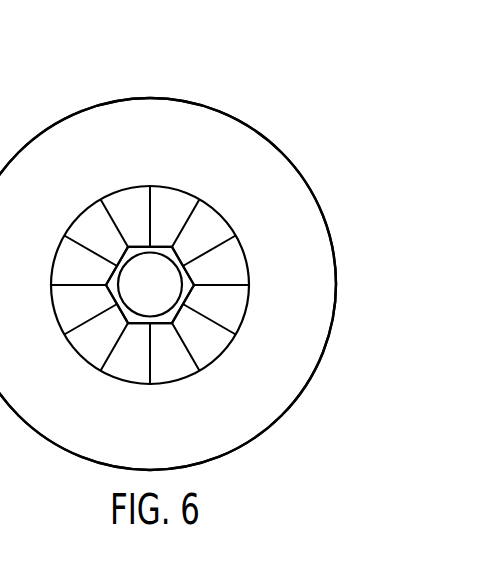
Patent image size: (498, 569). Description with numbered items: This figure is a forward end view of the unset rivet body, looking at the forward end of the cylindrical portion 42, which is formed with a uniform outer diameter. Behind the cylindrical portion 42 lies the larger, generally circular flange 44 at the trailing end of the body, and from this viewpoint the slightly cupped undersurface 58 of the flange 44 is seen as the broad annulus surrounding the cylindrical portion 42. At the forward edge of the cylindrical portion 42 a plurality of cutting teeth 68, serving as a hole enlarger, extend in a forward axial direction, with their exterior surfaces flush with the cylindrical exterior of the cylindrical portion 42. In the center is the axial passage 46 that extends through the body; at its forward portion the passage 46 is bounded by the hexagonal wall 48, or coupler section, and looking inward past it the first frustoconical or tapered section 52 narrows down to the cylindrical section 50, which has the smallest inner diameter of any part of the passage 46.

The flange 44 is at (207, 100).
The cupped undersurface 58 is at (287, 165).
The cylindrical portion 42 is at (258, 257).
The first frustoconical or tapered section 52 is at (186, 273).
The cutting teeth 68 is at (229, 318).
The axial passage 46 is at (133, 266).
The hexagonal wall 48 is at (113, 294).
The cylindrical section 50 is at (143, 311).